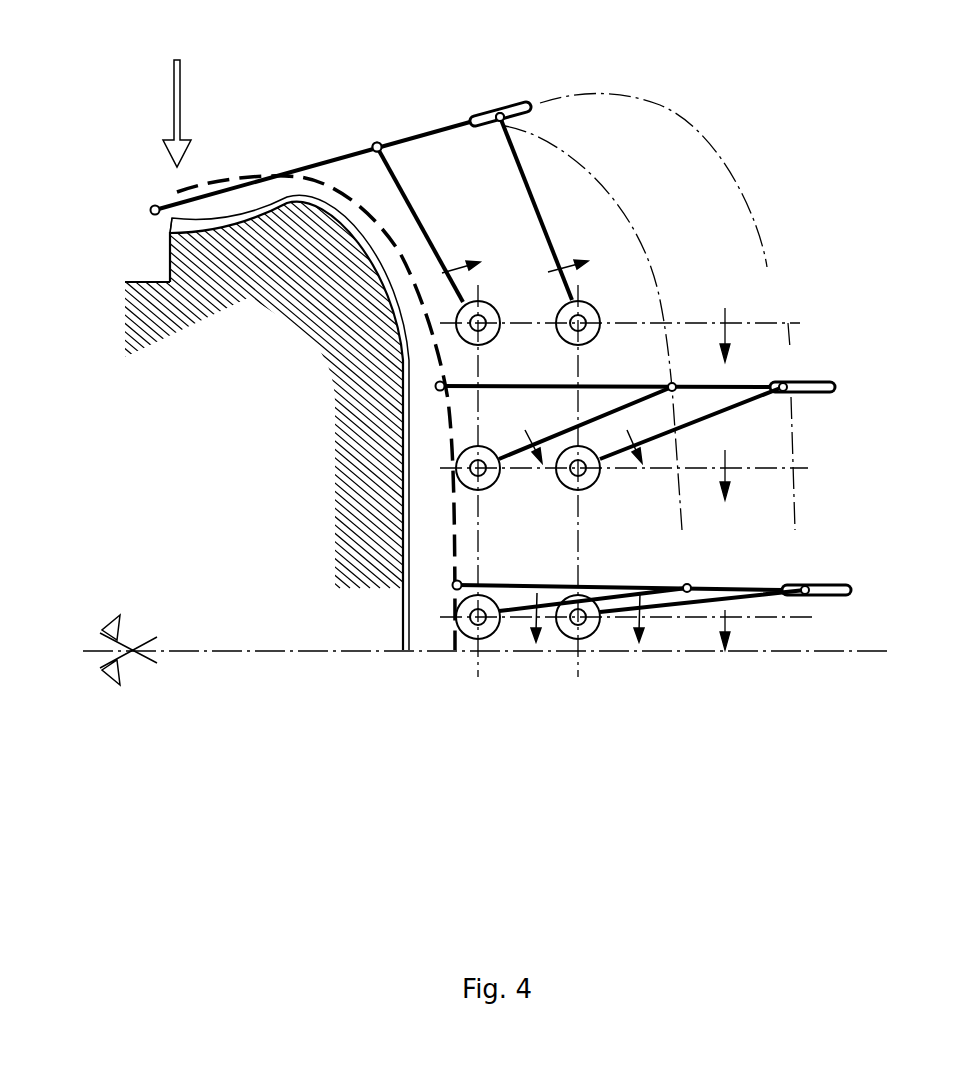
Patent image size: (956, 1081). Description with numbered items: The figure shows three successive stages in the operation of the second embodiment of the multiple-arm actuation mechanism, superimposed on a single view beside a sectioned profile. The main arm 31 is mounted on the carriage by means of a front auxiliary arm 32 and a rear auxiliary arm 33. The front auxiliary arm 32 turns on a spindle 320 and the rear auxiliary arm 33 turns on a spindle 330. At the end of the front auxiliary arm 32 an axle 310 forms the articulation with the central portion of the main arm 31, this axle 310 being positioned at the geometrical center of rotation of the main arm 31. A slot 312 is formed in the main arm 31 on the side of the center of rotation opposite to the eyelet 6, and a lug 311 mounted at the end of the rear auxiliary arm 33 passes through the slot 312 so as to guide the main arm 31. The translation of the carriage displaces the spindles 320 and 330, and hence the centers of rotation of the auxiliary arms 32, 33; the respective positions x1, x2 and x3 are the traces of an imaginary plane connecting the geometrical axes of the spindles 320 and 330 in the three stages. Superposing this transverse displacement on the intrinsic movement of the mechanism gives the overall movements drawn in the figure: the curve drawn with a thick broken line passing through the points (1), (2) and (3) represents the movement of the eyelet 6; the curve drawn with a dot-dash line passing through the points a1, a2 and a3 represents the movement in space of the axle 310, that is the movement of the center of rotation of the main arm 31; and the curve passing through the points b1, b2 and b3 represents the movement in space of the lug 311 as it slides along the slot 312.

The point 1 is at (142, 192).
The point 2 is at (620, 386).
The point 3 is at (634, 586).
The eyelet 6 is at (155, 200).
The main arm 31 is at (380, 113).
The axle 310 is at (370, 140).
The lug 311 is at (478, 118).
The slot 312 is at (538, 118).
The front auxiliary arm 32 is at (420, 217).
The rear auxiliary arm 33 is at (538, 210).
The spindle 320 is at (462, 633).
The spindle 330 is at (563, 635).
The point a1 is at (377, 128).
The point b1 is at (493, 97).
The point a2 is at (672, 371).
The point b2 is at (790, 371).
The point a3 is at (687, 567).
The point b3 is at (802, 568).
The position x1 is at (754, 322).
The position x2 is at (758, 469).
The position x3 is at (752, 625).